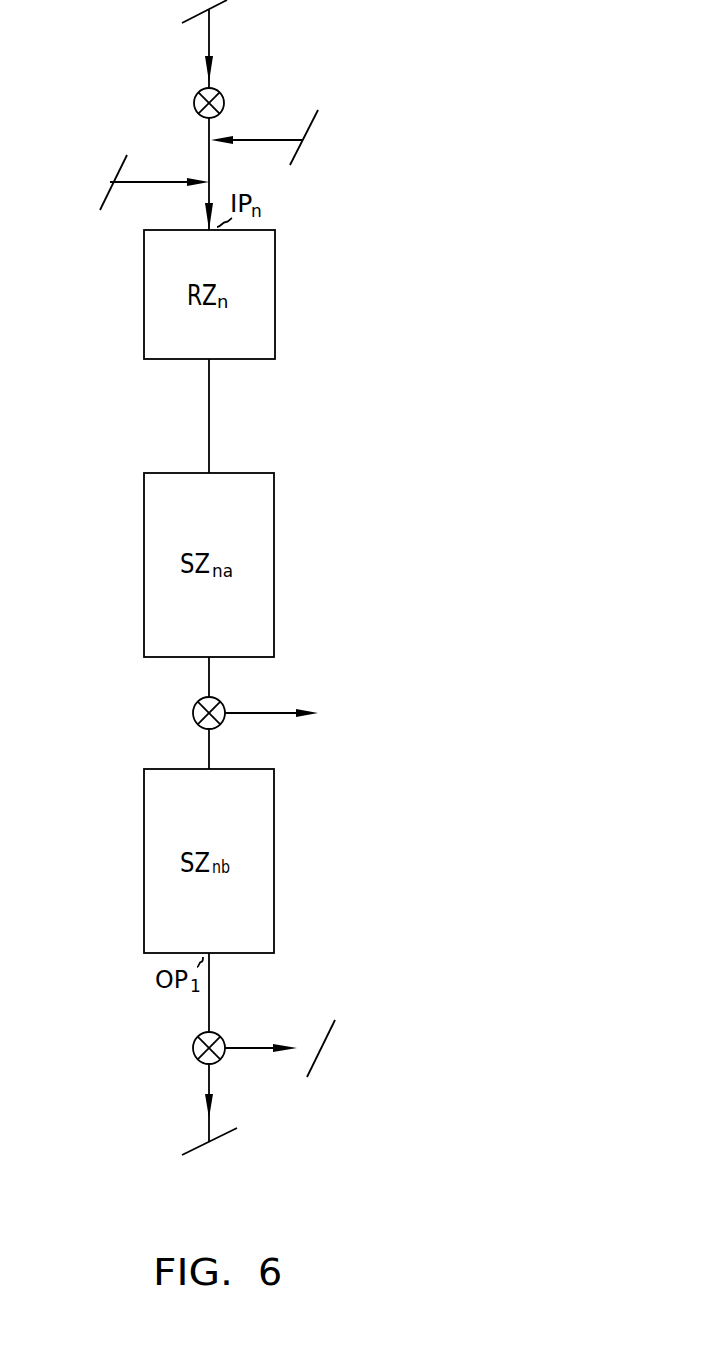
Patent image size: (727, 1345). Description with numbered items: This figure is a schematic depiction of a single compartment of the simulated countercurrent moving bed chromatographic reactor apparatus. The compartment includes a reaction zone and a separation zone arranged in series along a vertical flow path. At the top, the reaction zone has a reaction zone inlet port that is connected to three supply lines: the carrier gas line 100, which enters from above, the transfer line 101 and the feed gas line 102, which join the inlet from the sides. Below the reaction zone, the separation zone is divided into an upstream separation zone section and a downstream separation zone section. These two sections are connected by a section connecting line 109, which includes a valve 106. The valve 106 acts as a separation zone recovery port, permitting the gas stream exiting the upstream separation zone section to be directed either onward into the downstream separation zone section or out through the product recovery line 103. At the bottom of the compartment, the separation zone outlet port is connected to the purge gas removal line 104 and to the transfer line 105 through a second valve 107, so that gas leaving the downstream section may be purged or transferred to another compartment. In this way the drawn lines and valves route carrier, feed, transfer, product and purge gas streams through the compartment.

The carrier gas line 100 is at (209, 28).
The transfer line 101 is at (163, 179).
The feed gas line 102 is at (271, 136).
The product recovery line 103 is at (260, 712).
The purge gas removal line 104 is at (207, 1078).
The transfer line 105 is at (251, 1047).
The valve 106 is at (197, 727).
The valve 107 is at (192, 1047).
The section connecting line 109 is at (198, 662).